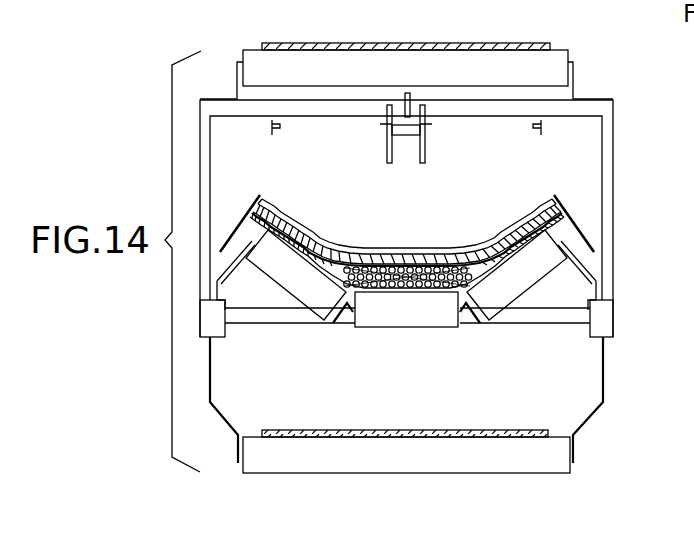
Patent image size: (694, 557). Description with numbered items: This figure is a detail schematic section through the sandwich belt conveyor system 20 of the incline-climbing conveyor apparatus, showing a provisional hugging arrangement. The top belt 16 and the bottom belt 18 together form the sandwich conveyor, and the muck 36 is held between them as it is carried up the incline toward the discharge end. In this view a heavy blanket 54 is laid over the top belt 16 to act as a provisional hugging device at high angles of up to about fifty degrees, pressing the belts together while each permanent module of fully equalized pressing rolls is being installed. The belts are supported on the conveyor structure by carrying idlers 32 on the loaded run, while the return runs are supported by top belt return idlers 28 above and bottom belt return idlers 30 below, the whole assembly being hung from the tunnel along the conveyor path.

The top belt 16 is at (275, 43).
The bottom belt 18 is at (503, 260).
The sandwich belt conveyor system 20 is at (418, 303).
The top belt return idlers 28 is at (568, 52).
The bottom belt return idlers 30 is at (402, 430).
The carrying idlers 32 is at (490, 313).
The muck 36 is at (395, 257).
The heavy blanket 54 is at (460, 243).